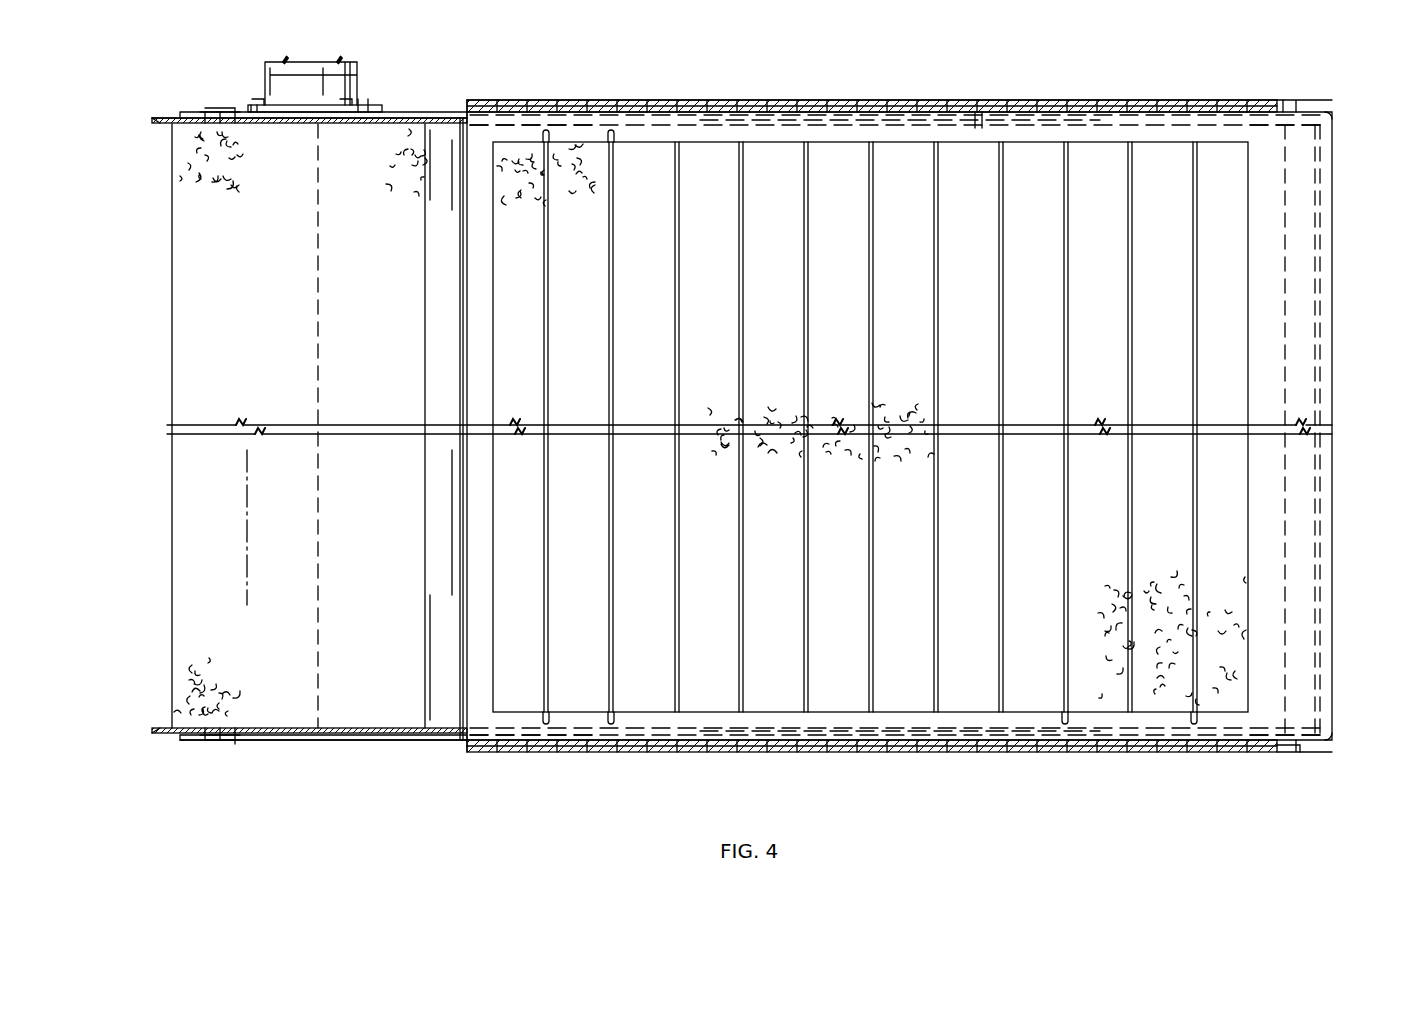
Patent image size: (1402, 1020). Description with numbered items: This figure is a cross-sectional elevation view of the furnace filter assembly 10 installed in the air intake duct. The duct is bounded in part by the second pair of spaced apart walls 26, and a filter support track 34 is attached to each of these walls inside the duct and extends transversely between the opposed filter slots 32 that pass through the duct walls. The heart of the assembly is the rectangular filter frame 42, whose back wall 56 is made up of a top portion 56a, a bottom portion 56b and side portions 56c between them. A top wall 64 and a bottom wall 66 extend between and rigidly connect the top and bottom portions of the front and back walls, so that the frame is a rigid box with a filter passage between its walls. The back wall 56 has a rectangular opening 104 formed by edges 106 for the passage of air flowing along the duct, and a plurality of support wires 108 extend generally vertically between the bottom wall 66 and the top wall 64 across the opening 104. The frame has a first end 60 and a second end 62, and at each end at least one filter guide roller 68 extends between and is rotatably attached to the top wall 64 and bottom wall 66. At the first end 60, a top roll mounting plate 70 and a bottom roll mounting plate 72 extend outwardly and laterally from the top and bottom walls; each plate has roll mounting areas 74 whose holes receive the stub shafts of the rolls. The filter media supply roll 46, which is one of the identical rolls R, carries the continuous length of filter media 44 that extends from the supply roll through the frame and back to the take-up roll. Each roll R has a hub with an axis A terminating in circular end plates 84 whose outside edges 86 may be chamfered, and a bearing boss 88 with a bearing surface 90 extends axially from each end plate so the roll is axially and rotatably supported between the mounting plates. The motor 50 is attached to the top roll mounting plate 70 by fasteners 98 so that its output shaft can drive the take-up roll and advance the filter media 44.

The furnace filter assembly 10 is at (220, 826).
The second pair of spaced apart walls 26 is at (1072, 104).
The filter slots 32 is at (476, 104).
The filter support track 34 is at (1133, 104).
The filter frame 42 is at (680, 108).
The filter media 44 is at (190, 232).
The filter media supply roll 46 is at (168, 338).
The motor 50 is at (360, 73).
The back wall 56 is at (988, 112).
The top portion of back wall 56a is at (905, 130).
The bottom portion of back wall 56b is at (903, 717).
The side portions of back wall 56c is at (481, 207).
The first end of filter frame 60 is at (418, 762).
The second end of filter frame 62 is at (1318, 103).
The top wall 64 is at (1284, 110).
The bottom wall 66 is at (1285, 745).
The filter guide roller 68 is at (1310, 216).
The top roll mounting plate 70 is at (218, 112).
The bottom roll mounting plate 72 is at (200, 744).
The roll mounting areas 74 is at (240, 120).
The end plate 84 is at (180, 126).
The outside edges of end plates 86 is at (153, 121).
The bearing boss 88 is at (225, 126).
The bearing surface 90 is at (215, 114).
The fasteners 98 is at (257, 101).
The opening 104 is at (1024, 710).
The edges 106 is at (772, 155).
The support wires 108 is at (804, 690).
The axis A is at (246, 483).
The roll R is at (150, 738).